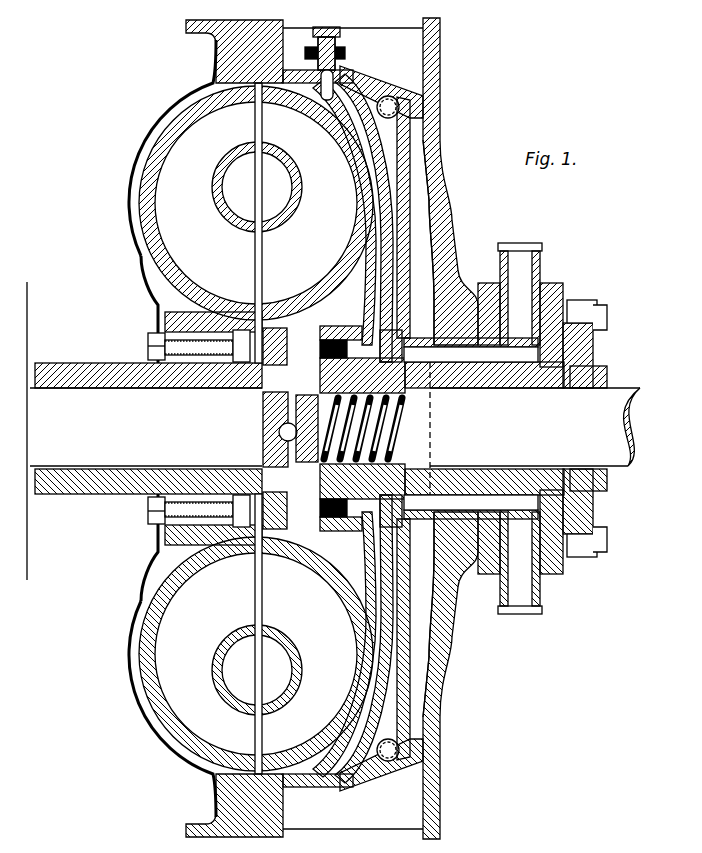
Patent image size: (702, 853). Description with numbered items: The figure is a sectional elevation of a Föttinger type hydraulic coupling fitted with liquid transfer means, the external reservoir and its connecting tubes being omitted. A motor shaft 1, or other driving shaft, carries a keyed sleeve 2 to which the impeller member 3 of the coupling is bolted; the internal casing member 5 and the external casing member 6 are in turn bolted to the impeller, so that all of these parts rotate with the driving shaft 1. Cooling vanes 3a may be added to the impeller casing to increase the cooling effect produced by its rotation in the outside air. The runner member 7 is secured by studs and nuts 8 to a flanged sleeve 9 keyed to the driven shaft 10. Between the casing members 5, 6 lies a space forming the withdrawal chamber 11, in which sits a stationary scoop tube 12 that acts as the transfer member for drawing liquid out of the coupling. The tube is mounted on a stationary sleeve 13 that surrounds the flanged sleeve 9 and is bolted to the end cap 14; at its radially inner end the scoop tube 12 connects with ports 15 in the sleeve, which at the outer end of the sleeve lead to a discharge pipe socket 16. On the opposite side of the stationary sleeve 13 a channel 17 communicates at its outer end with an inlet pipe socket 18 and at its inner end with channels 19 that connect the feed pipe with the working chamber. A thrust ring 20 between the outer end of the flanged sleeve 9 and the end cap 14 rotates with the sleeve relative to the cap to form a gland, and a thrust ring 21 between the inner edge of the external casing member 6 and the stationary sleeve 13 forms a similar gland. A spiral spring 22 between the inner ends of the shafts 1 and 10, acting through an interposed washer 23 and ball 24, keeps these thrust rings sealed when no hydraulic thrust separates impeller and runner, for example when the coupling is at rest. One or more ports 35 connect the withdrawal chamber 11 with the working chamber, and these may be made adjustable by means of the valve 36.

The motor shaft 1 is at (146, 427).
The sleeve 2 is at (90, 372).
The impeller member 3 is at (142, 185).
The cooling vanes 3a is at (140, 228).
The internal casing member 5 is at (283, 26).
The external casing member 6 is at (442, 105).
The runner member 7 is at (345, 140).
The studs and nuts 8 is at (277, 333).
The flanged sleeve 9 is at (344, 338).
The driven shaft 10 is at (535, 428).
The withdrawal chamber 11 is at (436, 168).
The scoop tube 12 is at (421, 157).
The stationary sleeve 13 is at (398, 330).
The end cap 14 is at (594, 345).
The ports 15 is at (488, 364).
The discharge pipe socket 16 is at (541, 256).
The channel 17 is at (488, 492).
The inlet pipe socket 18 is at (521, 607).
The channels 19 is at (432, 476).
The thrust ring 20 is at (600, 370).
The thrust ring 21 is at (451, 300).
The spiral spring 22 is at (402, 423).
The washer 23 is at (263, 410).
The ball 24 is at (279, 432).
The ports 35 is at (340, 70).
The valve 36 is at (302, 102).